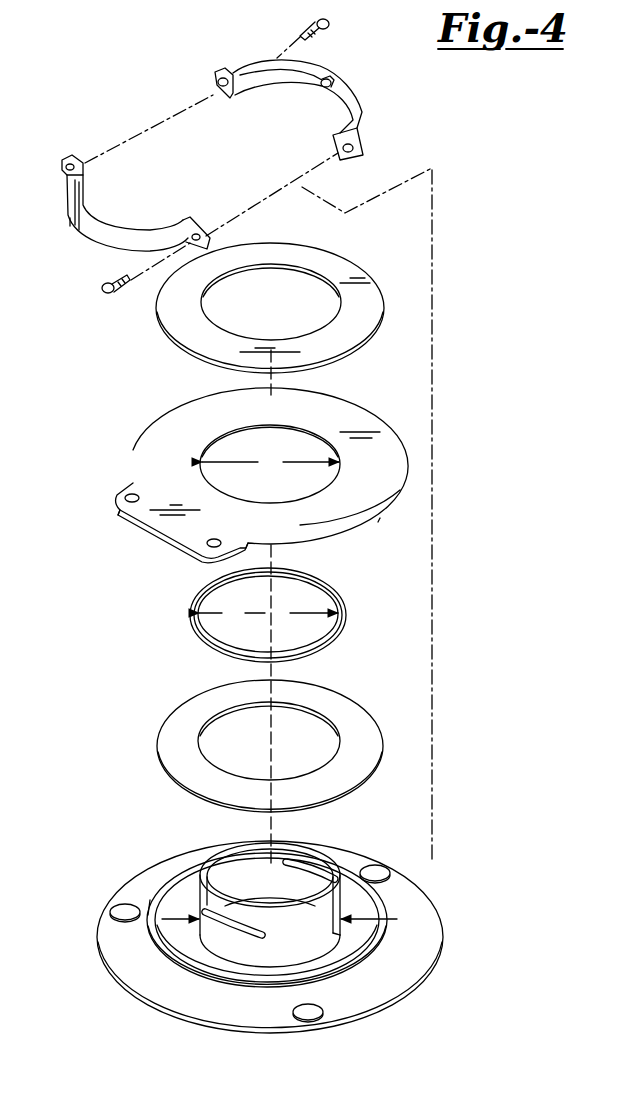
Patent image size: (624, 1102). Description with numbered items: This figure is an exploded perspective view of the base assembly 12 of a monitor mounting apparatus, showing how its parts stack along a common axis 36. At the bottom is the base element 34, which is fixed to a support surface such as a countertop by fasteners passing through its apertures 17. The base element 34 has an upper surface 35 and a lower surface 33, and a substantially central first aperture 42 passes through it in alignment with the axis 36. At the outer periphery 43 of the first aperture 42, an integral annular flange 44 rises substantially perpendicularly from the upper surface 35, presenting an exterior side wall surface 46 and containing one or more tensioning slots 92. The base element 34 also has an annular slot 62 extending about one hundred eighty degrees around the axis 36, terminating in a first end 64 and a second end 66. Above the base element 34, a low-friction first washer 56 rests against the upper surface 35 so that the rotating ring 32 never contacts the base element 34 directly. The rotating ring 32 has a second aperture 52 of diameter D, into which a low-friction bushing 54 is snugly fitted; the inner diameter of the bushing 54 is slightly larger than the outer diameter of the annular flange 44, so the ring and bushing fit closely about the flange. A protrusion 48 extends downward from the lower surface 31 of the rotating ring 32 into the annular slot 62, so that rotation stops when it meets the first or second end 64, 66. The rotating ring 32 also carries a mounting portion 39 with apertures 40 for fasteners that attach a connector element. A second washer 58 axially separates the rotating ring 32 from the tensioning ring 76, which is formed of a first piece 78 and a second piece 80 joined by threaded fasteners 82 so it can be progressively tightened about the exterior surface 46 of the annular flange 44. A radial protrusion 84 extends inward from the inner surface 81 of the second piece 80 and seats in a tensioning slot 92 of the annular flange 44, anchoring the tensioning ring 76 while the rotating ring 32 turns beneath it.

The base assembly 12 is at (449, 396).
The apertures 17 is at (114, 900).
The lower surface 31 is at (380, 518).
The rotating ring 32 is at (239, 489).
The lower surface 33 is at (130, 995).
The base element 34 is at (270, 938).
The upper surface 35 is at (122, 952).
The axis 36 is at (273, 613).
The mounting portion 39 is at (119, 510).
The apertures 40 is at (135, 483).
The first aperture 42 is at (243, 893).
The outer periphery 43 is at (250, 970).
The annular flange 44 is at (282, 843).
The exterior side wall surface 46 is at (150, 920).
The protrusion 48 is at (357, 532).
The second aperture 52 is at (206, 447).
The bushing 54 is at (298, 615).
The first washer 56 is at (357, 718).
The second washer 58 is at (337, 263).
The annular slot 62 is at (385, 945).
The first end 64 is at (322, 982).
The second end 66 is at (147, 912).
The tensioning ring 76 is at (114, 244).
The first piece 78 is at (70, 222).
The second piece 80 is at (324, 110).
The inner surface 81 is at (250, 80).
The fasteners 82 is at (318, 37).
The radial protrusion 84 is at (322, 88).
The tensioning slots 92 is at (312, 884).